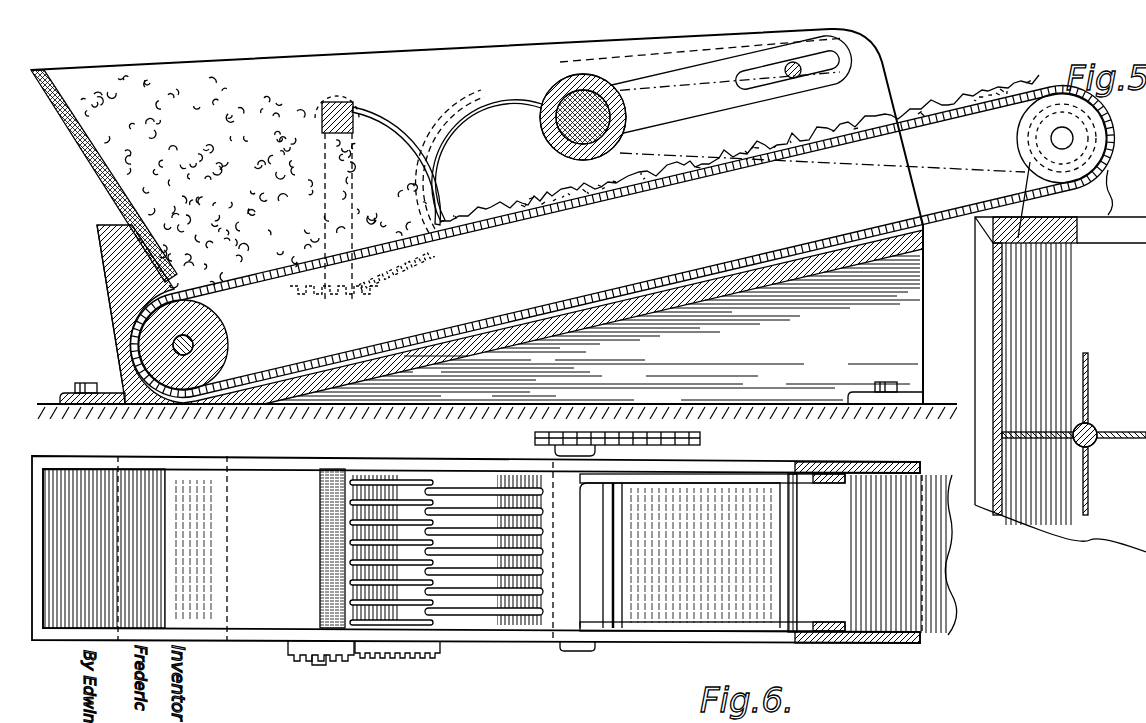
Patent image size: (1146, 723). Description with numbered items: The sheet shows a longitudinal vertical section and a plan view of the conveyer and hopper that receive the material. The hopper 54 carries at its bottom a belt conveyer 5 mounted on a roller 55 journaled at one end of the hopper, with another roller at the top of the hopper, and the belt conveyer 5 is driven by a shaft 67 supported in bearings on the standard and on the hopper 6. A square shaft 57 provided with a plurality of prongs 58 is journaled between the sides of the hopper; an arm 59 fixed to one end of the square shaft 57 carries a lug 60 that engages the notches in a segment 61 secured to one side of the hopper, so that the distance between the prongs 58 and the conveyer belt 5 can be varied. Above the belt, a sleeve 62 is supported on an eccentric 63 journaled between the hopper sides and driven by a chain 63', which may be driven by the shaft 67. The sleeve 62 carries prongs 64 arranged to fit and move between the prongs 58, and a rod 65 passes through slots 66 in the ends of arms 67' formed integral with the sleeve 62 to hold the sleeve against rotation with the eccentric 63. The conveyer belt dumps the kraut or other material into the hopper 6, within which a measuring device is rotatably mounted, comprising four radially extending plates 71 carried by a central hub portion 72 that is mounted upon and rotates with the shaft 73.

In FIG. 6, the belt conveyer 5 is at (938, 622).
In FIG. 5, the hopper 6 is at (993, 285).
In FIG. 5, the hopper 54 is at (113, 272).
In FIG. 5, the roller 55 is at (152, 347).
In FIG. 6, the roller 55 is at (230, 586).
In FIG. 5, the square shaft 57 is at (354, 106).
In FIG. 6, the square shaft 57 is at (320, 507).
In FIG. 5, the prongs 58 is at (405, 134).
In FIG. 6, the prongs 58 is at (398, 481).
In FIG. 5, the arm 59 is at (320, 116).
In FIG. 6, the arm 59 is at (332, 665).
In FIG. 5, the lug 60 is at (348, 298).
In FIG. 5, the segment 61 is at (418, 278).
In FIG. 6, the segment 61 is at (412, 665).
In FIG. 5, the sleeve 62 is at (566, 147).
In FIG. 6, the sleeve 62 is at (613, 576).
In FIG. 5, the eccentric 63 is at (601, 117).
In FIG. 5, the chain 63' is at (822, 154).
In FIG. 6, the chain 63' is at (638, 444).
In FIG. 5, the prongs 64 is at (511, 104).
In FIG. 6, the prongs 64 is at (513, 614).
In FIG. 5, the rod 65 is at (793, 78).
In FIG. 6, the rod 65 is at (798, 548).
In FIG. 5, the slots 66 is at (830, 64).
In FIG. 5, the shaft 67 is at (1045, 138).
In FIG. 5, the arms 67' is at (706, 88).
In FIG. 6, the arms 67' is at (712, 552).
In FIG. 5, the radially extending plates 71 is at (1089, 378).
In FIG. 5, the central hub portion 72 is at (1097, 430).
In FIG. 5, the shaft 73 is at (1097, 442).